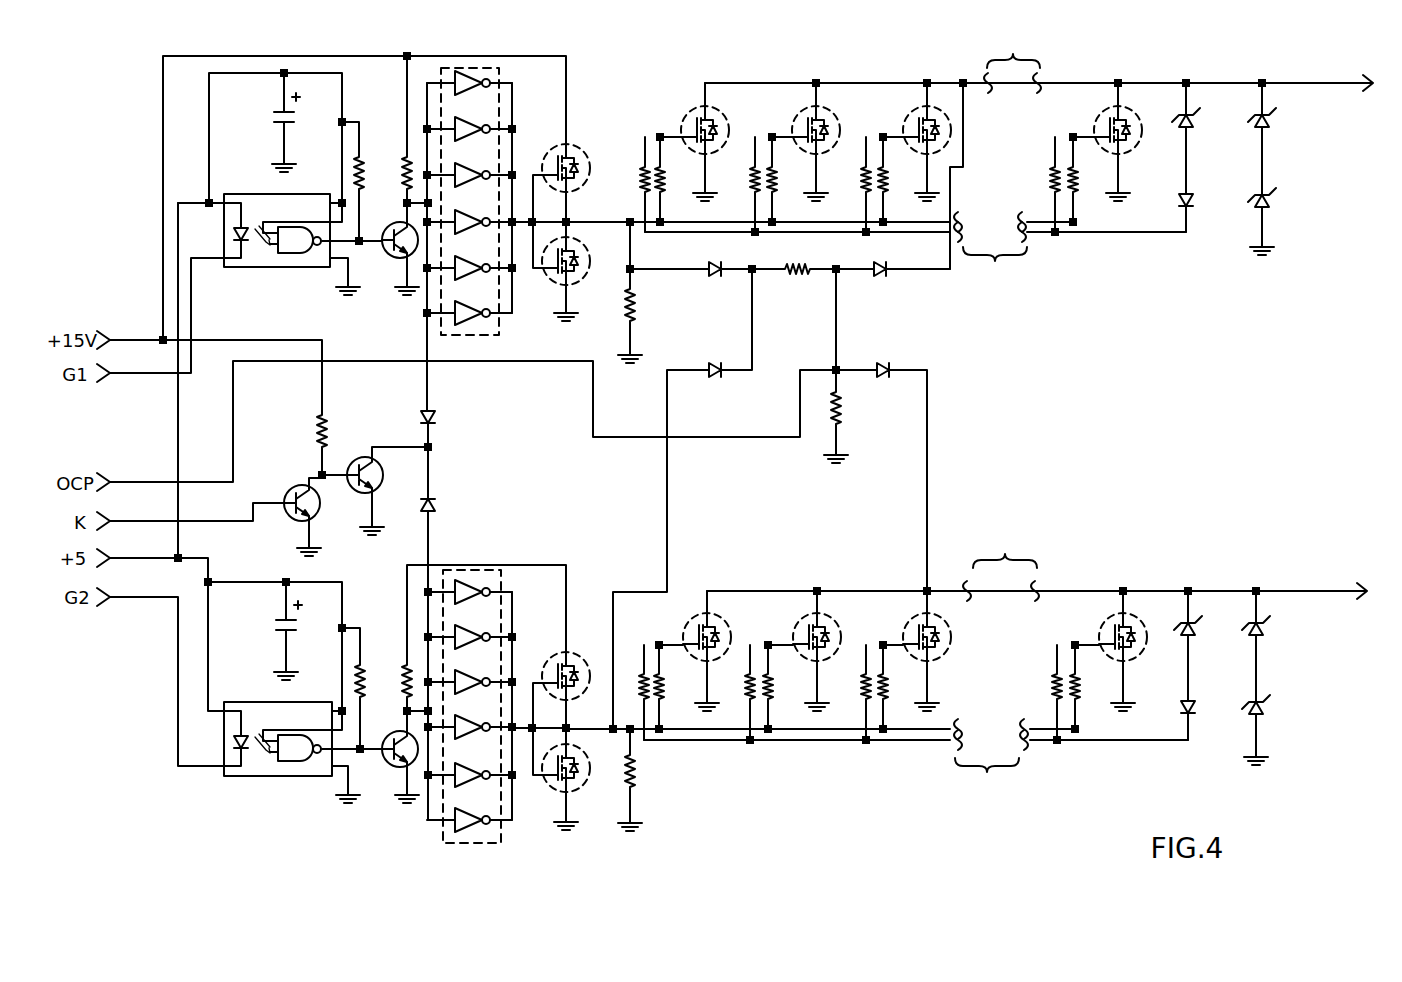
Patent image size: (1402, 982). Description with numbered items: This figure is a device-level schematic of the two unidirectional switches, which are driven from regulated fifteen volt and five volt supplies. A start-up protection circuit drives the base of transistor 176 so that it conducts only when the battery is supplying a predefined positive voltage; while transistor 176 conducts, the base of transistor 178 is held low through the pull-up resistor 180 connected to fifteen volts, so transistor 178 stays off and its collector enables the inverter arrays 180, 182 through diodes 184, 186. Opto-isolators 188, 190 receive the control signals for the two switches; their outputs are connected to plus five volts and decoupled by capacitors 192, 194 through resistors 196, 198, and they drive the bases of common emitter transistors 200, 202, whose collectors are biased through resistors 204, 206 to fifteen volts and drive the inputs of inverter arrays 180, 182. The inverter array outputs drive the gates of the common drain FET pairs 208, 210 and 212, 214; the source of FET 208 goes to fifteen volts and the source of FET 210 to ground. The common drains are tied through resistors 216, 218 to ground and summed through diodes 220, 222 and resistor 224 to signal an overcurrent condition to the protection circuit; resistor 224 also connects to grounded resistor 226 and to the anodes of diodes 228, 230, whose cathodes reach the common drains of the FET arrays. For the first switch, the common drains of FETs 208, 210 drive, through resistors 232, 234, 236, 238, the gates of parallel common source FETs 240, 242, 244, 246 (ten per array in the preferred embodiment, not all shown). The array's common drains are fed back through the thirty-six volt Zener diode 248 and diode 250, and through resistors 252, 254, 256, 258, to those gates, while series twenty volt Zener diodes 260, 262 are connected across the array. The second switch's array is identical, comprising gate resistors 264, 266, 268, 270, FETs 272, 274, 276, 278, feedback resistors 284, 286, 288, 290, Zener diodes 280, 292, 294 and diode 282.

The transistor 176 is at (288, 513).
The transistor 178 is at (352, 488).
The inverter array 180 is at (500, 108).
The inverter array 182 is at (502, 612).
The diode 184 is at (435, 416).
The diode 186 is at (435, 507).
The opto-isolator 188 is at (248, 217).
The opto-isolator 190 is at (248, 725).
The capacitor 192 is at (278, 110).
The capacitor 194 is at (283, 618).
The resistor 196 is at (363, 166).
The resistor 198 is at (363, 664).
The common emitter transistor 200 is at (394, 252).
The common emitter transistor 202 is at (394, 761).
The resistor 204 is at (402, 181).
The resistor 206 is at (402, 690).
The FET 208 is at (587, 152).
The FET 210 is at (592, 280).
The FET 212 is at (578, 656).
The FET 214 is at (592, 788).
The resistor 216 is at (636, 308).
The resistor 218 is at (635, 771).
The diode 220 is at (717, 276).
The diode 222 is at (718, 378).
The resistor 224 is at (800, 274).
The resistor 226 is at (842, 417).
The diode 228 is at (886, 279).
The diode 230 is at (886, 363).
The resistor 232 is at (662, 185).
The resistor 234 is at (775, 185).
The resistor 236 is at (885, 185).
The resistor 238 is at (1075, 187).
The common source FET 240 is at (730, 130).
The common source FET 242 is at (840, 130).
The common source FET 244 is at (952, 136).
The common source FET 246 is at (1098, 130).
The 36 V Zener diode 248 is at (1192, 122).
The diode 250 is at (1193, 201).
The resistor 252 is at (643, 190).
The resistor 254 is at (752, 186).
The resistor 256 is at (864, 186).
The resistor 258 is at (1054, 186).
The 20 V Zener diode 260 is at (1267, 122).
The 20 V Zener diode 262 is at (1270, 201).
The resistor 264 is at (663, 693).
The resistor 266 is at (772, 694).
The resistor 268 is at (887, 694).
The resistor 270 is at (1079, 694).
The FET 272 is at (730, 636).
The FET 274 is at (838, 636).
The FET 276 is at (951, 643).
The FET 278 is at (1104, 636).
The Zener diode 280 is at (1194, 628).
The diode 282 is at (1194, 708).
The resistor 284 is at (640, 693).
The resistor 286 is at (748, 694).
The resistor 288 is at (862, 694).
The resistor 290 is at (1053, 690).
The Zener diode 292 is at (1262, 628).
The Zener diode 294 is at (1262, 708).